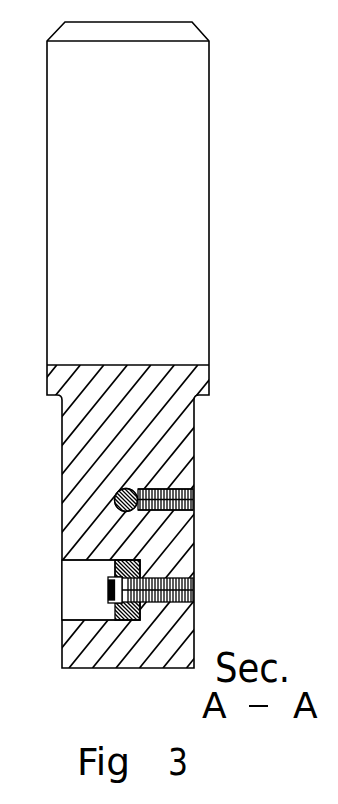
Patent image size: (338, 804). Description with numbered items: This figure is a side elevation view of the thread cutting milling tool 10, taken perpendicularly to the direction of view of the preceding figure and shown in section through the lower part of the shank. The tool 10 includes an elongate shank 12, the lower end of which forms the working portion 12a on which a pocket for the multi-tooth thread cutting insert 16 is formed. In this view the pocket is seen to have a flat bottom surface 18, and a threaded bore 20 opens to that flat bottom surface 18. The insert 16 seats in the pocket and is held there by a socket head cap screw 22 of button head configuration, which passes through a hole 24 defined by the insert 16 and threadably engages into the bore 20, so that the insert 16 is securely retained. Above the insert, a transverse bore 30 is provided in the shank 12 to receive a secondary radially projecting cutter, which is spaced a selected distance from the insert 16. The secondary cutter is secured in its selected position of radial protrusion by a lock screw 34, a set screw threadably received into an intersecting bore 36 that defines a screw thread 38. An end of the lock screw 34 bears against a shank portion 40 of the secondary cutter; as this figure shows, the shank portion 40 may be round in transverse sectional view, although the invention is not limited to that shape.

The thread cutting milling tool 10 is at (236, 159).
The elongate shank 12 is at (143, 240).
The working portion 12a is at (198, 431).
The thread cutting insert 16 is at (12, 514).
The flat bottom surface 18 is at (113, 562).
The threaded bore 20 is at (194, 588).
The socket head cap screw 22 is at (110, 601).
The hole 24 is at (109, 603).
The transverse bore 30 is at (8, 177).
The lock screw 34 is at (180, 511).
The intersecting bore 36 is at (193, 493).
The screw thread 38 is at (170, 485).
The shank portion 40 is at (127, 490).